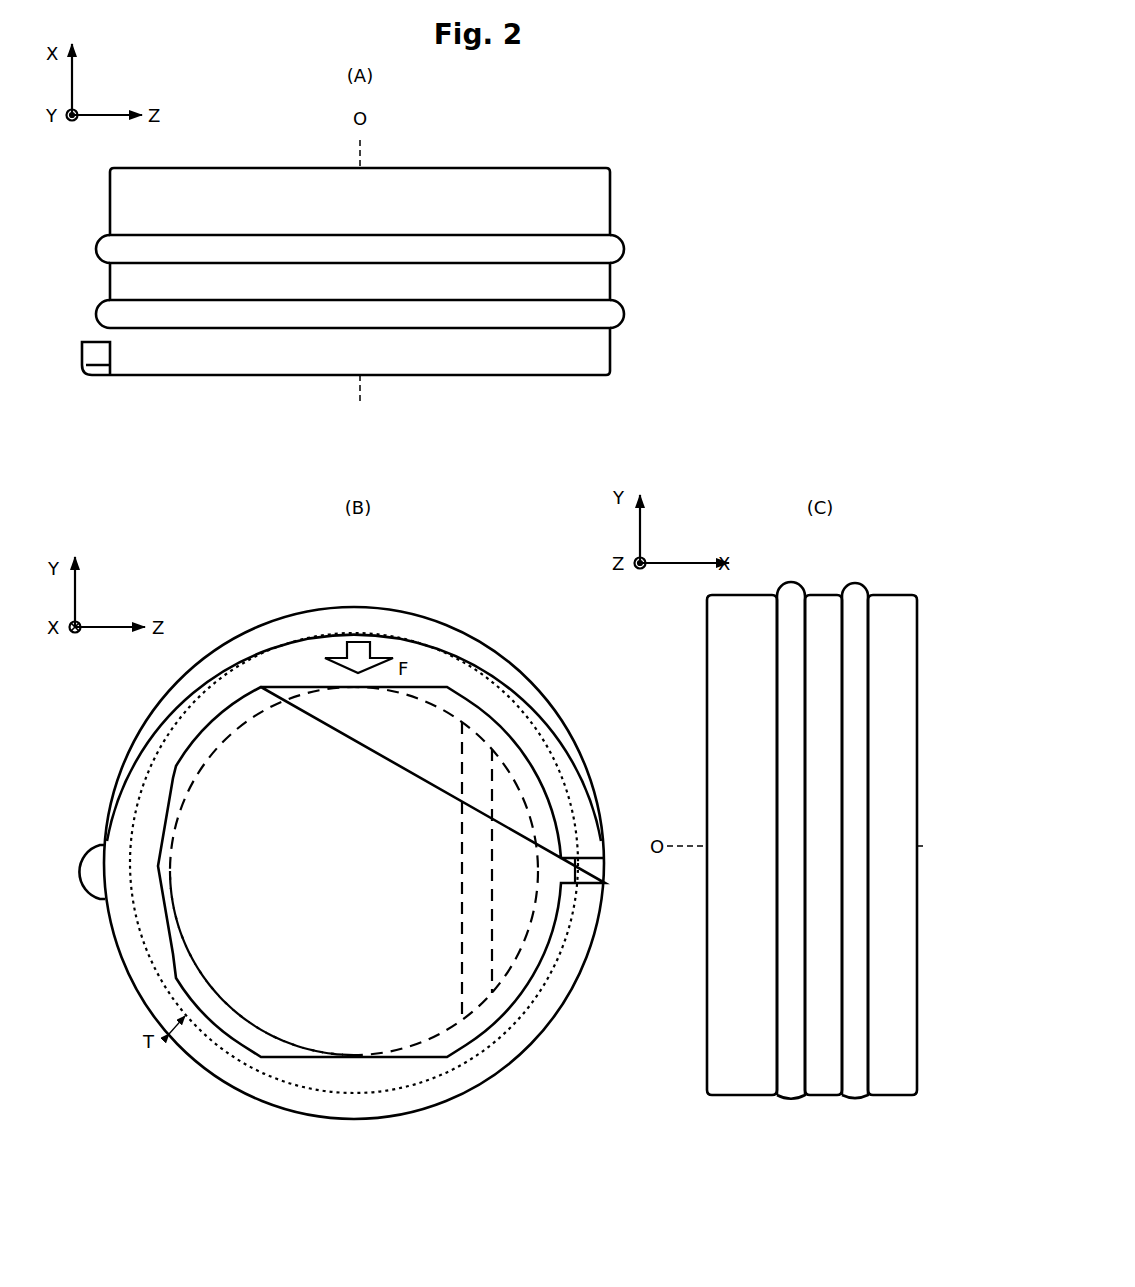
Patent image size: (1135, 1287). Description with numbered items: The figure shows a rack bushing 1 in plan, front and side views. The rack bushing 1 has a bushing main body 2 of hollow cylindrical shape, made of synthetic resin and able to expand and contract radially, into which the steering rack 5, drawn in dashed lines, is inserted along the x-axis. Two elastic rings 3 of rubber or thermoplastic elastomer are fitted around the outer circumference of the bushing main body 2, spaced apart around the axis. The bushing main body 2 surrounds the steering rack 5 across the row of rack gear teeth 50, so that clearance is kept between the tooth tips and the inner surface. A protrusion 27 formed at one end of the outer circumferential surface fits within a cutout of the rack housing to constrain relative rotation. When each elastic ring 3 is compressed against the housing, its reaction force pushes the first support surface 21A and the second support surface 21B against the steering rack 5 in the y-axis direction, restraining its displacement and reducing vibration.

The rack bushing 1 is at (533, 114).
The bushing main body 2 is at (612, 168).
The elastic ring 3 is at (612, 250).
The steering rack 5 is at (490, 703).
The rack gear teeth 50 is at (495, 803).
The protrusion 27 is at (88, 848).
The first support surface 21A is at (282, 1056).
The second support surface 21B is at (282, 688).